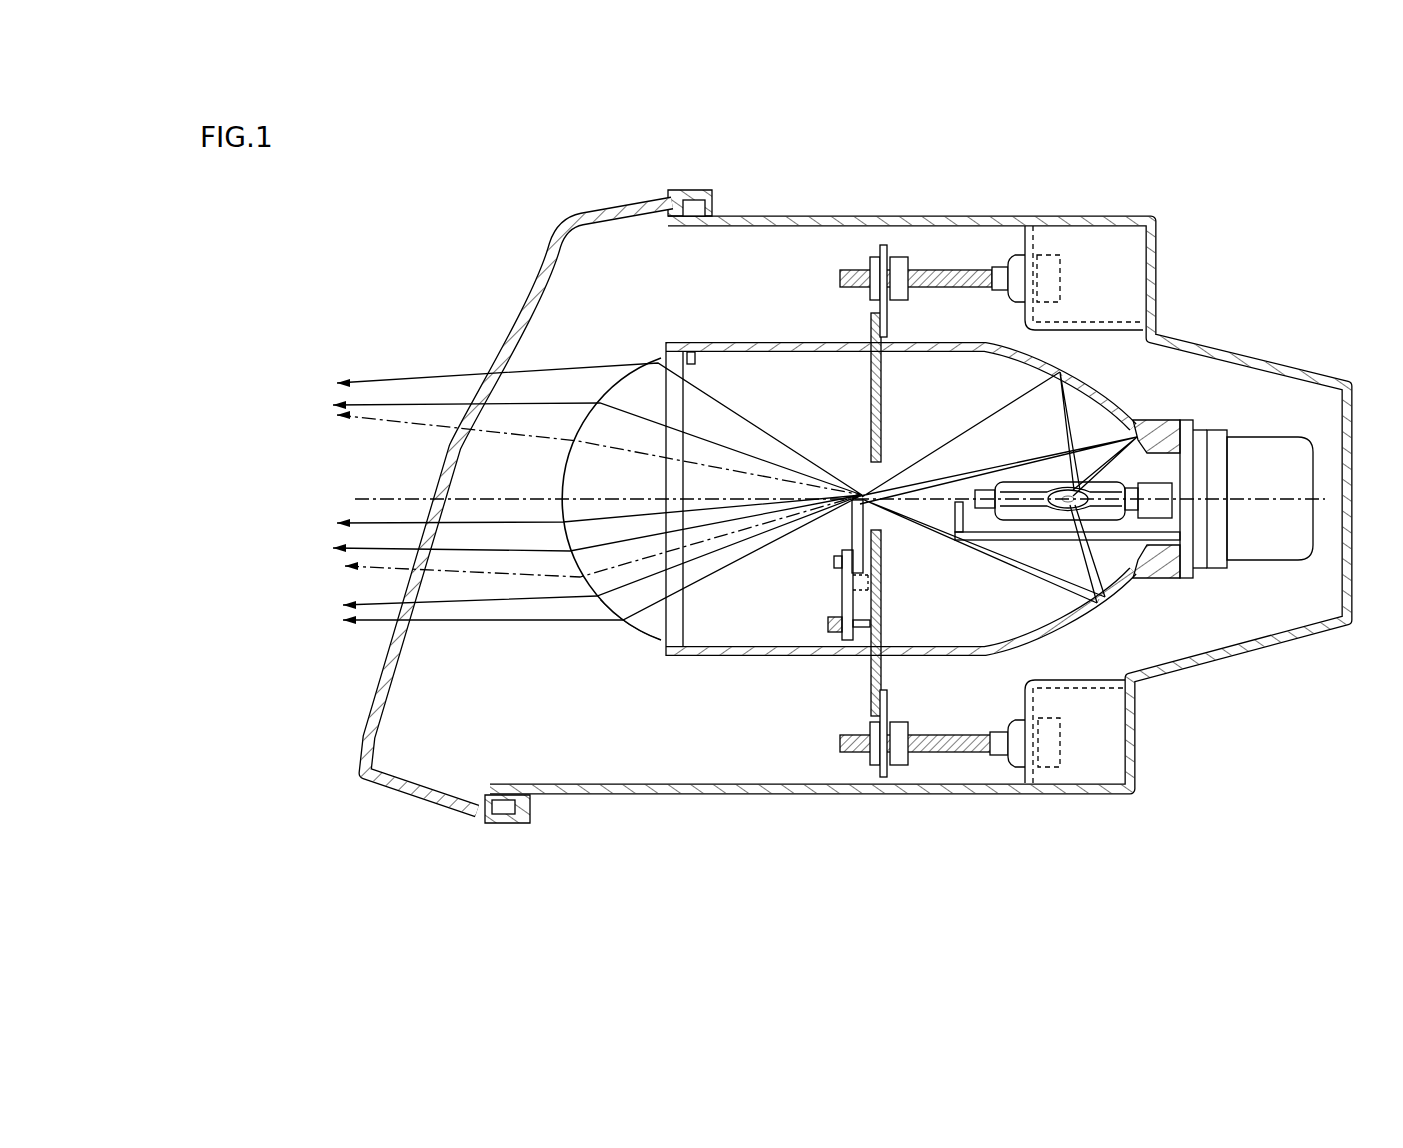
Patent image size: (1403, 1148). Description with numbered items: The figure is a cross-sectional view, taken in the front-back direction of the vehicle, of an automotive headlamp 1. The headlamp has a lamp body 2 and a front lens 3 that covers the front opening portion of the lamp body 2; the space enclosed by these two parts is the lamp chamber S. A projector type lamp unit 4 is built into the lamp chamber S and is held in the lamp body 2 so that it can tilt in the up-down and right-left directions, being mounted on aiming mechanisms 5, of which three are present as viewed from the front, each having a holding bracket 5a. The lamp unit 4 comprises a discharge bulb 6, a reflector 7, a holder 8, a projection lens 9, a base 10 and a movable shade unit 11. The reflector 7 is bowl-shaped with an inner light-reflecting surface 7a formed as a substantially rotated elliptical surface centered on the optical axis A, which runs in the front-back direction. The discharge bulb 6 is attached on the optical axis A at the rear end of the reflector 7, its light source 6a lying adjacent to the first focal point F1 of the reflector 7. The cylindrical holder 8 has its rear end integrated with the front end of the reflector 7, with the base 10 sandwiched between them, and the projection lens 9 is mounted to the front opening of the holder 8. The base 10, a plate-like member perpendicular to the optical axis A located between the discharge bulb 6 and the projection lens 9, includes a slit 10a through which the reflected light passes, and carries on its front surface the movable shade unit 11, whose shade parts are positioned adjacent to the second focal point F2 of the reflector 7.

The automotive headlamp 1 is at (336, 190).
The lamp body 2 is at (1318, 364).
The front lens 3 is at (588, 212).
The lamp unit 4 is at (648, 656).
The aiming mechanism 5 is at (903, 246).
The holding bracket 5a is at (880, 244).
The discharge bulb 6 is at (1100, 524).
The light source 6a is at (1080, 492).
The reflector 7 is at (1140, 398).
The light-reflecting surface 7a is at (1085, 392).
The holder 8 is at (720, 342).
The projection lens 9 is at (612, 640).
The base 10 is at (870, 328).
The slit 10a is at (882, 497).
The movable shade unit 11 is at (822, 640).
The optical axis A is at (400, 497).
The lamp chamber S is at (621, 320).
The first focal point F1 is at (1060, 490).
The second focal point F2 is at (858, 482).